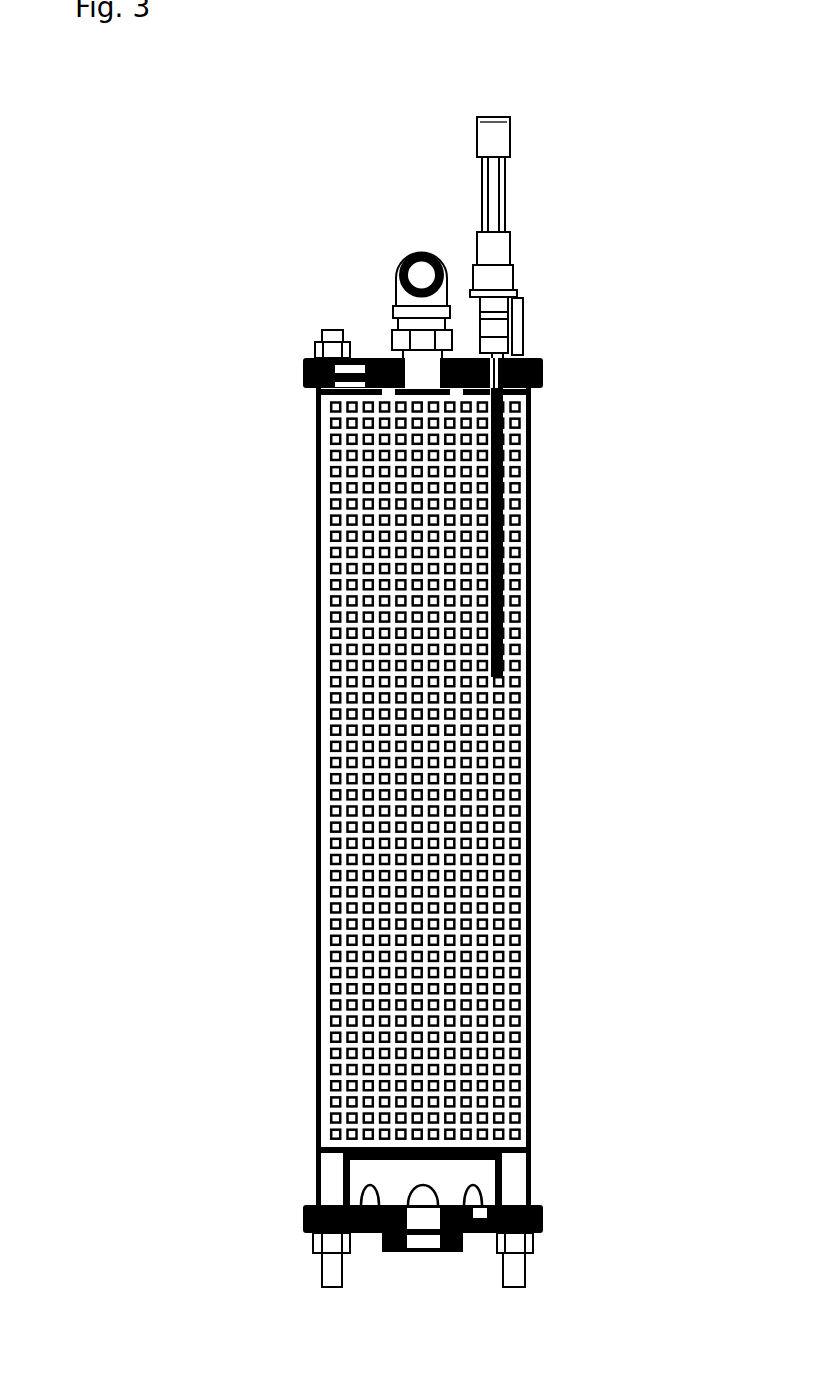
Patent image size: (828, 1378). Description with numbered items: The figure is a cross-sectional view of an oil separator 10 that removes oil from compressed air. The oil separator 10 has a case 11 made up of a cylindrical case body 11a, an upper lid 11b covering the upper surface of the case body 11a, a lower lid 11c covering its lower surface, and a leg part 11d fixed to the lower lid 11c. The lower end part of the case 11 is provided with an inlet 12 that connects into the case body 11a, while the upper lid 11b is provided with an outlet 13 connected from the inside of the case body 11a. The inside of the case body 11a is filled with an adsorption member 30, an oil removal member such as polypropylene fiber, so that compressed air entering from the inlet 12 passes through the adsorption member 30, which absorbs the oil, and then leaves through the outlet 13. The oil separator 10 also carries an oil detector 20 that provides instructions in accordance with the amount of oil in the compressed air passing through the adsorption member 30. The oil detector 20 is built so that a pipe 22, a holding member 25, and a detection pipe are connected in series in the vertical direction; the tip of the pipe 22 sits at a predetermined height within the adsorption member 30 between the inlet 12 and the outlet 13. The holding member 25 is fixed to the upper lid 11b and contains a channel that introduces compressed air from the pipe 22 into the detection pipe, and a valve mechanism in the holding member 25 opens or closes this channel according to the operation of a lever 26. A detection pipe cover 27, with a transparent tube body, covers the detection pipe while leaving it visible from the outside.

The oil separator 10 is at (310, 198).
The case 11 is at (308, 547).
The case body 11a is at (533, 743).
The upper lid 11b is at (544, 377).
The lower lid 11c is at (545, 1222).
The leg part 11d is at (513, 1272).
The inlet 12 is at (422, 1270).
The outlet 13 is at (422, 262).
The oil detector 20 is at (520, 110).
The pipe 22 is at (503, 532).
The holding member 25 is at (468, 318).
The lever 26 is at (524, 325).
The detection pipe cover 27 is at (520, 207).
The adsorption member 30 is at (334, 852).